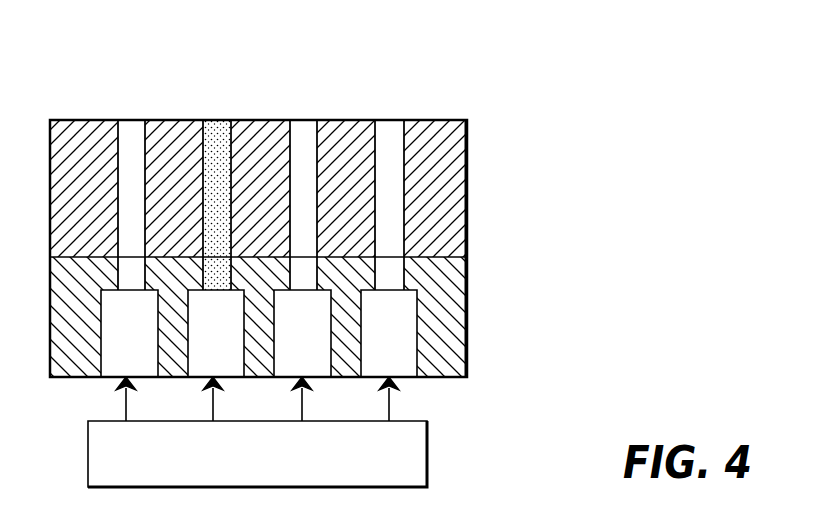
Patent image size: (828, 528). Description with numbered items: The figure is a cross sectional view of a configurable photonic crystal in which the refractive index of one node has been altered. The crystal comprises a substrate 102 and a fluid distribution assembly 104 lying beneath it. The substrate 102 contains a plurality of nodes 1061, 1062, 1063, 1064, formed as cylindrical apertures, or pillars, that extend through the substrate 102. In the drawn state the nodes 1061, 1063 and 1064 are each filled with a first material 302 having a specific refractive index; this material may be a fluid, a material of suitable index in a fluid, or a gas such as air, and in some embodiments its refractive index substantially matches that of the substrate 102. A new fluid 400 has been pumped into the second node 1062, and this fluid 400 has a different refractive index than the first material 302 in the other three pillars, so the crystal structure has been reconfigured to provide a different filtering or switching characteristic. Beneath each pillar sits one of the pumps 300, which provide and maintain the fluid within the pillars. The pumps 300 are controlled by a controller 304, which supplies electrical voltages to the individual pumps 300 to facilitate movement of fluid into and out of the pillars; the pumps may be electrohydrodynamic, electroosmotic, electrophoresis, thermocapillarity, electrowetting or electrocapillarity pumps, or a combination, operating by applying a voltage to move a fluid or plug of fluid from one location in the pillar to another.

The substrate 102 is at (468, 153).
The fluid distribution assembly 104 is at (468, 278).
The first node 1061 is at (158, 123).
The second node 1062 is at (243, 125).
The third node 1063 is at (342, 125).
The fourth node 1064 is at (423, 122).
The first material 302 is at (120, 118).
The new fluid 400 is at (212, 118).
The pumps 300 is at (403, 352).
The controller 304 is at (422, 460).